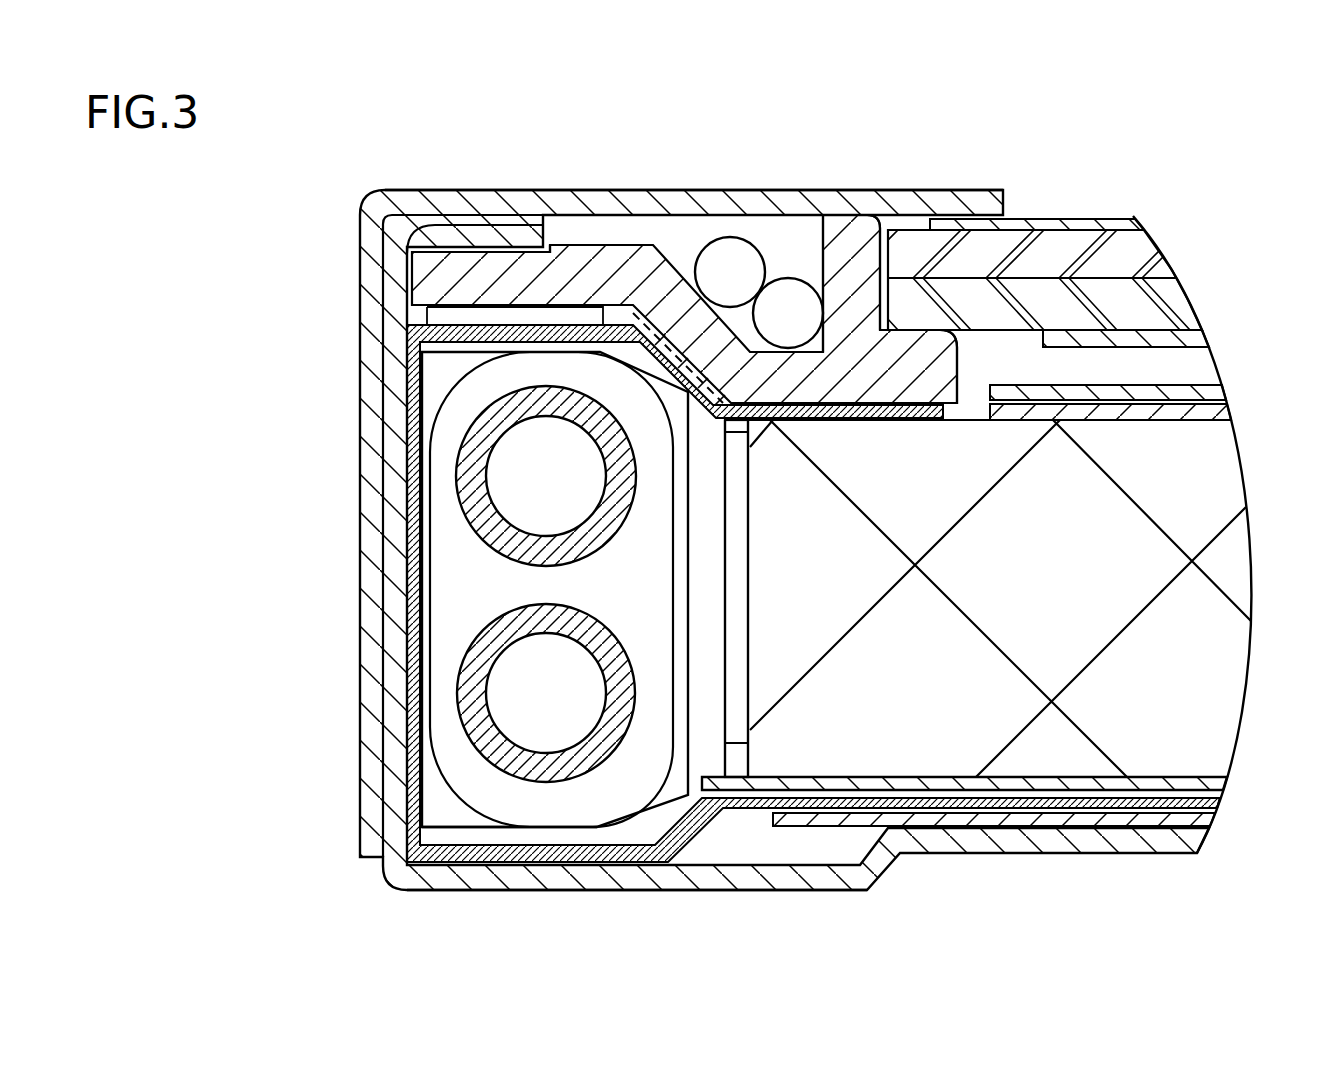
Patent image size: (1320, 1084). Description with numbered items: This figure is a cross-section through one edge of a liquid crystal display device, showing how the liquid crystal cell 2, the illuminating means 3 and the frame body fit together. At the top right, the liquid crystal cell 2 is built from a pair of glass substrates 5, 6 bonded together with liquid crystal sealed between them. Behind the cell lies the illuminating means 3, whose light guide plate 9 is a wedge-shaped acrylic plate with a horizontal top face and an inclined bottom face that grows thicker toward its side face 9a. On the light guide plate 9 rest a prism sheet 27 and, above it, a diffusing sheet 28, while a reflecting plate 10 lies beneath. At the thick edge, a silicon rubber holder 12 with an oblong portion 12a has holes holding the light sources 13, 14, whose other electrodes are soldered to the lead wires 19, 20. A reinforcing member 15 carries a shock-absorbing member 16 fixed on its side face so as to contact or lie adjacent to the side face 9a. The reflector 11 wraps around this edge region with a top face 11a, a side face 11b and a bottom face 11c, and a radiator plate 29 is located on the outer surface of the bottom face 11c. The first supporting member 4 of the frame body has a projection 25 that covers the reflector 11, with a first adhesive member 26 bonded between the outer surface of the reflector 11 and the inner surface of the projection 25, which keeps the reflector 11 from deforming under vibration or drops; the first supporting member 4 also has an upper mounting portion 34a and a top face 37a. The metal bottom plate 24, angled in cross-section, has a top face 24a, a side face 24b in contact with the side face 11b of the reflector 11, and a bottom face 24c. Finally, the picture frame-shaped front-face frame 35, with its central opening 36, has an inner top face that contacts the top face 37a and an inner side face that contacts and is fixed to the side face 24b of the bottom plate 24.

The liquid crystal cell 2 is at (1113, 215).
The illuminating means 3 is at (407, 798).
The first supporting member 4 is at (607, 245).
The glass substrate 5 is at (1143, 247).
The glass substrate 6 is at (1177, 298).
The light guide plate 9 is at (1228, 688).
The side face of light guide plate 9a is at (750, 525).
The reflecting plate 10 is at (1205, 776).
The reflector 11 is at (407, 683).
The top face of reflector 11a is at (866, 420).
The side face of reflector 11b is at (400, 600).
The bottom face of reflector 11c is at (878, 800).
The holder 12 is at (447, 622).
The oblong portion 12a is at (513, 805).
The light source 13 is at (490, 456).
The light source 14 is at (405, 742).
The reinforcing member 15 is at (705, 610).
The shock-absorbing member 16 is at (738, 575).
The lead wire 19 is at (788, 295).
The lead wire 20 is at (727, 253).
The bottom plate 24 is at (777, 892).
The top face of bottom plate 24a is at (473, 235).
The side face of bottom plate 24b is at (400, 513).
The bottom face of bottom plate 24c is at (610, 877).
The projection 25 is at (567, 266).
The first adhesive member 26 is at (470, 297).
The prism sheet 27 is at (1222, 420).
The diffusing sheet 28 is at (1197, 385).
The radiator plate 29 is at (847, 820).
The upper mounting portion 34a is at (920, 410).
The front-face frame 35 is at (486, 202).
The opening 36 is at (1025, 212).
The top face of first supporting member 37a is at (847, 262).